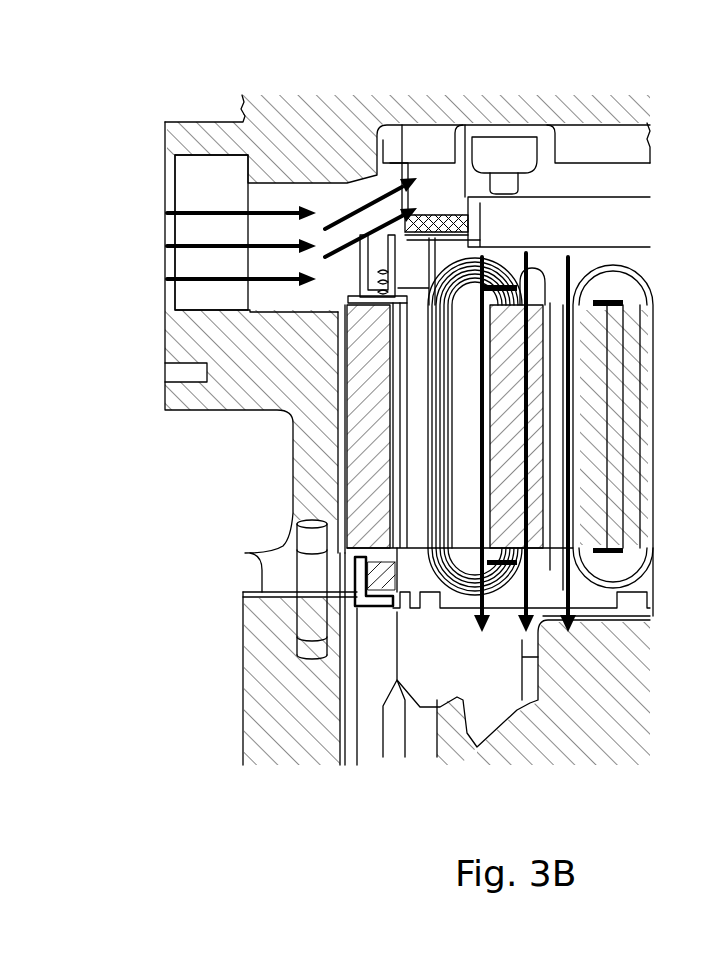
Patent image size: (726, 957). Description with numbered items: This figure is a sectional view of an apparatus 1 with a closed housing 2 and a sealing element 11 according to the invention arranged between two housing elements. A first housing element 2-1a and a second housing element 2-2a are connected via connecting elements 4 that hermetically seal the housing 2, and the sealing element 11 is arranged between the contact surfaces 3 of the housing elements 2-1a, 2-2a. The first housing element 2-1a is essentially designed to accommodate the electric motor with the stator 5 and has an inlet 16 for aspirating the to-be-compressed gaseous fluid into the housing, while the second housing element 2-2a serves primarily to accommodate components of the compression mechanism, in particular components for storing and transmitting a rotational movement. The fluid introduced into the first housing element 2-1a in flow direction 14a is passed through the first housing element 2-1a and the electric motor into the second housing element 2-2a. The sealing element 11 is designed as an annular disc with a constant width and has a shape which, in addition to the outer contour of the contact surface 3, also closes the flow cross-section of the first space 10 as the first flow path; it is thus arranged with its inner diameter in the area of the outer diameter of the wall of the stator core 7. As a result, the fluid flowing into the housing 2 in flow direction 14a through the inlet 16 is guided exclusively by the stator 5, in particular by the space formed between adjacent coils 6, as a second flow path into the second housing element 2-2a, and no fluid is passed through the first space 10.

The apparatus 1 is at (681, 118).
The housing 2 is at (364, 440).
The first housing element 2-1a is at (180, 143).
The second housing element 2-2a is at (272, 717).
The contact surface 3 is at (258, 595).
The connecting element 4 is at (306, 539).
The stator 5 is at (643, 440).
The stator core 7 is at (637, 391).
The coil 6 is at (588, 267).
The first space 10 is at (344, 454).
The sealing element 11 is at (258, 595).
The flow direction 14a is at (304, 212).
The inlet 16 is at (197, 312).